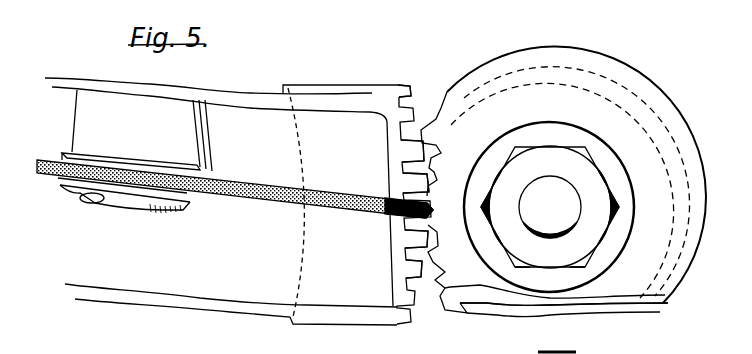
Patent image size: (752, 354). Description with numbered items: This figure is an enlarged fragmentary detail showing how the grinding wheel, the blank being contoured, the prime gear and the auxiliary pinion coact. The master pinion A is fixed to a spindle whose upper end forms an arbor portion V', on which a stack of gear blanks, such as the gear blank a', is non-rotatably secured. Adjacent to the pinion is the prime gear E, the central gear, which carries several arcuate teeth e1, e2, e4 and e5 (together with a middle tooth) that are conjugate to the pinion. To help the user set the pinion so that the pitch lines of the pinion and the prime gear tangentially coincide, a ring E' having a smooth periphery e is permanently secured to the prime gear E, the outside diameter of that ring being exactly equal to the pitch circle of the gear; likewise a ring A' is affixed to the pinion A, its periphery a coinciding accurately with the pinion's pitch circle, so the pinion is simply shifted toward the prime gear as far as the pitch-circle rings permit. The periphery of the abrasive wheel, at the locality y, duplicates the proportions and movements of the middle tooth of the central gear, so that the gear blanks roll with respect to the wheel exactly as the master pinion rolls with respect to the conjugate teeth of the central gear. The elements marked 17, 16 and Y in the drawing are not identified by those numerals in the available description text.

The journal box 17 is at (135, 151).
The lower frame bar 16 is at (231, 302).
The shaft Y is at (265, 203).
The locality of the abrader periphery y is at (433, 210).
The prime gear E is at (400, 191).
The ring E' is at (347, 77).
The smooth periphery e is at (400, 85).
The arcuate tooth e1 is at (407, 266).
The arcuate tooth e2 is at (413, 239).
The arcuate tooth e4 is at (412, 180).
The arcuate tooth e5 is at (410, 153).
The periphery of pinion ring a is at (444, 197).
The gear blank a' is at (570, 176).
The master pinion A is at (576, 194).
The ring A' is at (564, 322).
The arbor portion V' is at (550, 207).